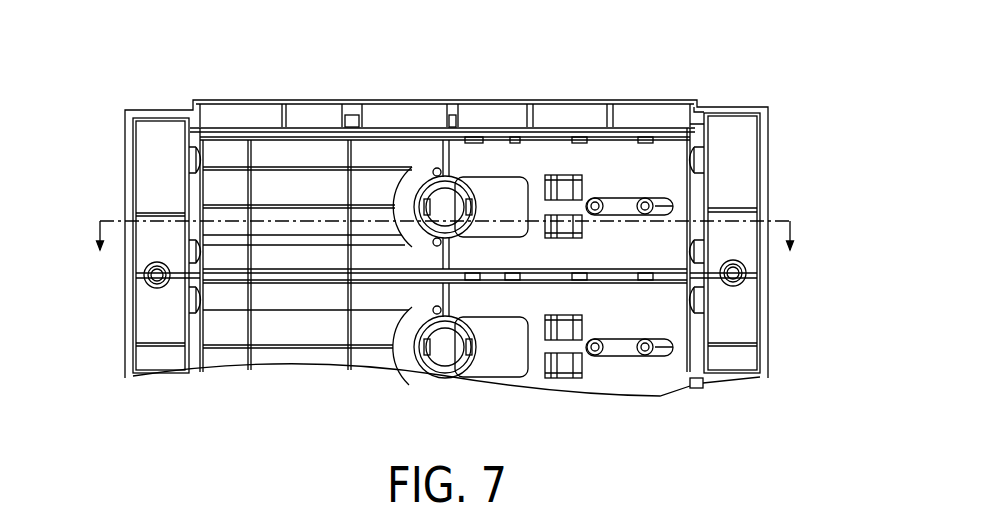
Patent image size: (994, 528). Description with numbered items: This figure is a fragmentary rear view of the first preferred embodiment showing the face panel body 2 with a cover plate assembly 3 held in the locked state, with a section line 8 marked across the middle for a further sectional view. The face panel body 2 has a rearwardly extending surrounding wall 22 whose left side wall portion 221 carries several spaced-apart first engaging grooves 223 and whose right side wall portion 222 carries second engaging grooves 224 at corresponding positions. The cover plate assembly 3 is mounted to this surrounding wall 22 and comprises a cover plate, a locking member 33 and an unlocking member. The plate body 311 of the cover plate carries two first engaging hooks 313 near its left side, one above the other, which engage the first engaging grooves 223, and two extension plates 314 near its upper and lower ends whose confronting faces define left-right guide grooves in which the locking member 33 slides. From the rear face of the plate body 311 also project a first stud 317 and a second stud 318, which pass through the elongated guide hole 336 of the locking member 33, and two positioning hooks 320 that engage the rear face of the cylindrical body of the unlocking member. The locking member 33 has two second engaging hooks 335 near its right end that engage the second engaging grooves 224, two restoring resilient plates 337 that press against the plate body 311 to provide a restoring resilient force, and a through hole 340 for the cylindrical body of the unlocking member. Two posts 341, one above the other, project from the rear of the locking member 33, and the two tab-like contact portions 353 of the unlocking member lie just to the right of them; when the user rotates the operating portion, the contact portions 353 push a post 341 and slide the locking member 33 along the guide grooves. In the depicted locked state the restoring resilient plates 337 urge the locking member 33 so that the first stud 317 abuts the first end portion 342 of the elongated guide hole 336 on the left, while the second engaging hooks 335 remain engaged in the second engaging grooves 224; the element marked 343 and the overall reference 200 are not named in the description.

The electronic module assembly 200 is at (150, 88).
The face panel body 2 is at (770, 105).
The surrounding wall 22 is at (704, 332).
The left side wall portion 221 is at (197, 353).
The right side wall portion 222 is at (700, 363).
The first engaging grooves 223 is at (188, 163).
The second engaging grooves 224 is at (700, 147).
The cover plate assembly 3 is at (675, 125).
The locking member 33 is at (700, 137).
The plate body 311 is at (270, 190).
The first engaging hooks 313 is at (195, 157).
The extension plates 314 is at (603, 137).
The first stud 317 is at (593, 202).
The second stud 318 is at (647, 201).
The positioning hooks 320 is at (418, 205).
The second engaging hooks 335 is at (703, 162).
The elongated guide hole 336 is at (627, 197).
The restoring resilient plates 337 is at (555, 187).
The through hole 340 is at (483, 188).
The posts 341 is at (434, 172).
The first end portion 342 is at (563, 227).
The slot end 343 is at (673, 205).
The contact portions 353 is at (446, 180).
The section line 8- 8 is at (446, 248).